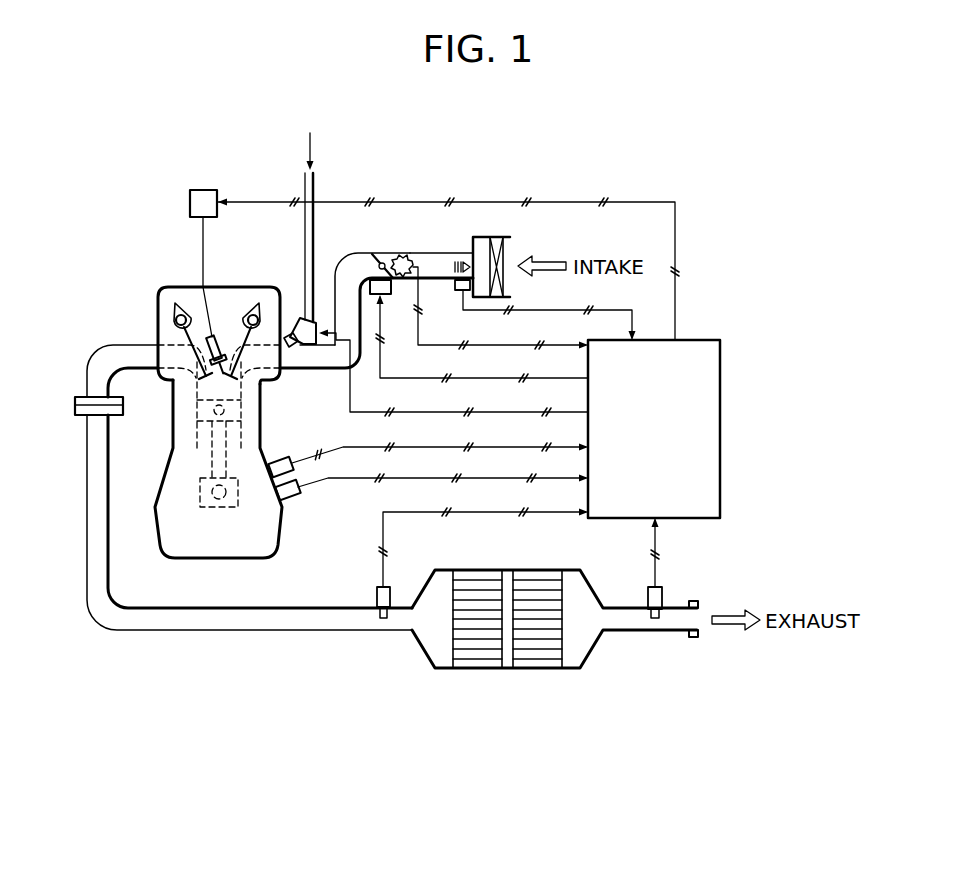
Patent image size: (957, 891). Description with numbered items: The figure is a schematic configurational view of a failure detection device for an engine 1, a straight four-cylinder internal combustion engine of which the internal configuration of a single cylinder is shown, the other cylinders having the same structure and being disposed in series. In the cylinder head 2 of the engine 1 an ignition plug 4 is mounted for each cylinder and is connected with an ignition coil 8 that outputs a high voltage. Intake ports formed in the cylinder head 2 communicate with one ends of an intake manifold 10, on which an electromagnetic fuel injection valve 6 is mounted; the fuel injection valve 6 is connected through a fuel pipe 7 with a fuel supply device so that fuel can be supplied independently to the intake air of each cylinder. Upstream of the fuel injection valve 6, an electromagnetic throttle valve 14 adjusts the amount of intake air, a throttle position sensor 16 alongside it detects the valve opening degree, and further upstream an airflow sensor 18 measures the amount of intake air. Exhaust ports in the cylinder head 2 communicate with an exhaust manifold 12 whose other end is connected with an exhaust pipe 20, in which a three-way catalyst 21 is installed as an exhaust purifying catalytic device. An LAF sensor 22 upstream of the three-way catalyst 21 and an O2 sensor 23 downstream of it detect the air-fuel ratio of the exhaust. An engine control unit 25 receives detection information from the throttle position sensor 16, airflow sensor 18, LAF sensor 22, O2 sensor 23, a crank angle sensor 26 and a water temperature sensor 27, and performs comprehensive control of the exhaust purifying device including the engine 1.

The engine 1 is at (150, 284).
The cylinder head 2 is at (182, 286).
The ignition plug 4 is at (205, 344).
The fuel injection valve 6 is at (300, 320).
The fuel pipe 7 is at (316, 190).
The ignition coil 8 is at (204, 190).
The intake manifold 10 is at (316, 371).
The exhaust manifold 12 is at (113, 356).
The throttle valve 14 is at (378, 254).
The throttle position sensor 16 is at (411, 259).
The airflow sensor 18 is at (460, 292).
The exhaust pipe 20 is at (200, 613).
The three-way catalyst 21 is at (507, 672).
The LAF sensor 22 is at (388, 588).
The O2 sensor 23 is at (660, 588).
The engine control unit 25 is at (705, 340).
The crank angle sensor 26 is at (275, 460).
The water temperature sensor 27 is at (288, 500).